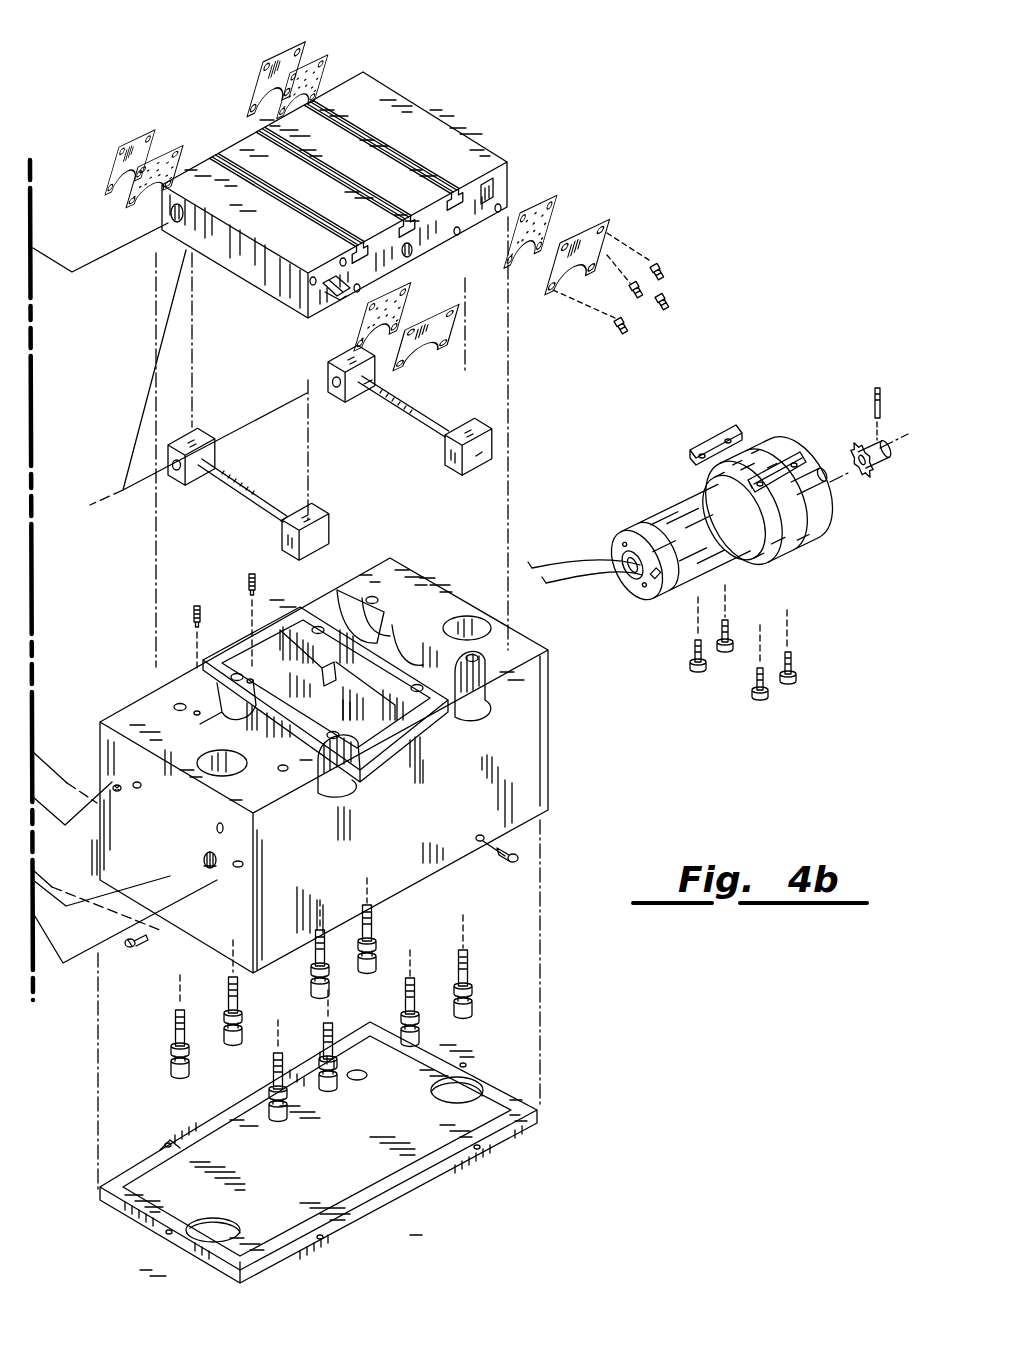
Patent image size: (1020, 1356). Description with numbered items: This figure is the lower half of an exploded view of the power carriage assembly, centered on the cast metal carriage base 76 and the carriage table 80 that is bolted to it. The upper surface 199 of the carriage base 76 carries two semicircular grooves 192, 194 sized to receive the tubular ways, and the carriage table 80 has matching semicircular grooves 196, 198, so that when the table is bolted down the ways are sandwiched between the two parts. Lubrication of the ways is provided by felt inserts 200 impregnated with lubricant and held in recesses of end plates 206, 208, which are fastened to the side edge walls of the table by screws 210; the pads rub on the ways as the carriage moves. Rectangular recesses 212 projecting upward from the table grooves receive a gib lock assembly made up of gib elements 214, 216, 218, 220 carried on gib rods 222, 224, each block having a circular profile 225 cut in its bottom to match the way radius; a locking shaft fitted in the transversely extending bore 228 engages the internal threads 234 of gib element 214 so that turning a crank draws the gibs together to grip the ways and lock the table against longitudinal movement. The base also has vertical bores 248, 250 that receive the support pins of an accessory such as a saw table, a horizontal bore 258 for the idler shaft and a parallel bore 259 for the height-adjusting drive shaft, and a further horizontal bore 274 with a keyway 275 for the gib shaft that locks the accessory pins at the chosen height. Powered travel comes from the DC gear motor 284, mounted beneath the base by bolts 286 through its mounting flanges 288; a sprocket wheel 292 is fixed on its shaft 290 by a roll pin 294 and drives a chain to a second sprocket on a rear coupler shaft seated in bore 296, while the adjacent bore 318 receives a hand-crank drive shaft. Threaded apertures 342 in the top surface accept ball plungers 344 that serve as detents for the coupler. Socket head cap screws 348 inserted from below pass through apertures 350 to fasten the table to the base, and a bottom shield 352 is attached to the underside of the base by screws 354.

The carriage base 76 is at (556, 756).
The carriage table 80 is at (438, 115).
The semicircular groove 192 is at (345, 782).
The semicircular groove 194 is at (480, 697).
The semicircular groove 196 is at (466, 218).
The semicircular groove 198 is at (336, 303).
The upper surface 199 is at (415, 578).
The felt inserts 200 is at (324, 52).
The end plate 206 is at (128, 130).
The end plate 208 is at (292, 50).
The screws 210 is at (613, 318).
The rectangular recesses 212 is at (495, 193).
The gib element 214 is at (330, 350).
The gib element 216 is at (492, 428).
The gib element 218 is at (200, 447).
The gib element 220 is at (313, 515).
The gib rod 222 is at (235, 473).
The gib rod 224 is at (393, 402).
The circular profile 225 is at (478, 460).
The transversely extending bore 228 is at (172, 222).
The internal threads 234 is at (339, 386).
The vertical bore 248 is at (215, 752).
The vertical bore 250 is at (462, 618).
The horizontal transversely extending bore 258 is at (223, 828).
The bore 259 is at (243, 865).
The horizontal transversely extending bore 274 is at (207, 852).
The keyway 275 is at (200, 872).
The DC electric motor and gear train 284 is at (773, 431).
The bolts 286 is at (763, 700).
The mounting flanges 288 is at (713, 433).
The shaft 290 is at (827, 490).
The sprocket wheel 292 is at (857, 445).
The roll pin 294 is at (883, 400).
The transversely extending bore 296 is at (137, 787).
The shaft receiving bore 318 is at (117, 787).
The threaded apertures 342 is at (194, 711).
The ball plunger 344 is at (248, 582).
The socket head cap screws 348 is at (237, 1043).
The apertures 350 is at (473, 657).
The bottom shield 352 is at (382, 1203).
The screws 354 is at (135, 942).